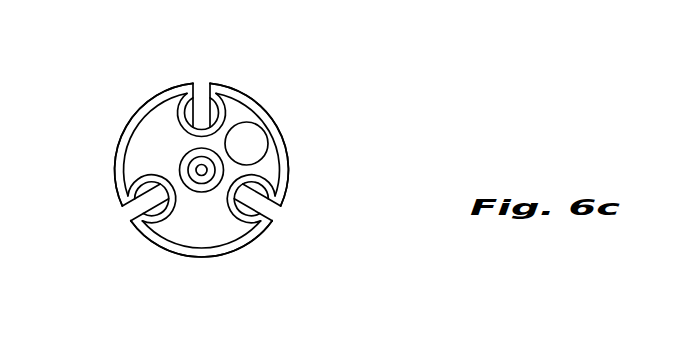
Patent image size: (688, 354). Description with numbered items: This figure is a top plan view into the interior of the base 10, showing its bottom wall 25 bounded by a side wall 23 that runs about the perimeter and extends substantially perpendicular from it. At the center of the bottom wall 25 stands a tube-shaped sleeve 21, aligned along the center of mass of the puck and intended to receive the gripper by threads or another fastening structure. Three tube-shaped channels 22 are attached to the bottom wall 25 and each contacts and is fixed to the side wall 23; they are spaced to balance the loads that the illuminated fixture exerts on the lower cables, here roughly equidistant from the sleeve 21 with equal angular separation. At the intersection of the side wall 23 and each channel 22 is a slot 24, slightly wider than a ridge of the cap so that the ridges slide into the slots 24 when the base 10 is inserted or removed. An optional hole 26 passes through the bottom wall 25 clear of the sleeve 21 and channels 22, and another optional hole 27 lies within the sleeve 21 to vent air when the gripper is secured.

The base 10 is at (128, 120).
The sleeve 21 is at (181, 161).
The channel 22 is at (184, 96).
The side wall 23 is at (282, 132).
The slot 24 is at (203, 87).
The bottom wall 25 is at (272, 167).
The hole 26 is at (247, 133).
The hole 27 is at (202, 176).